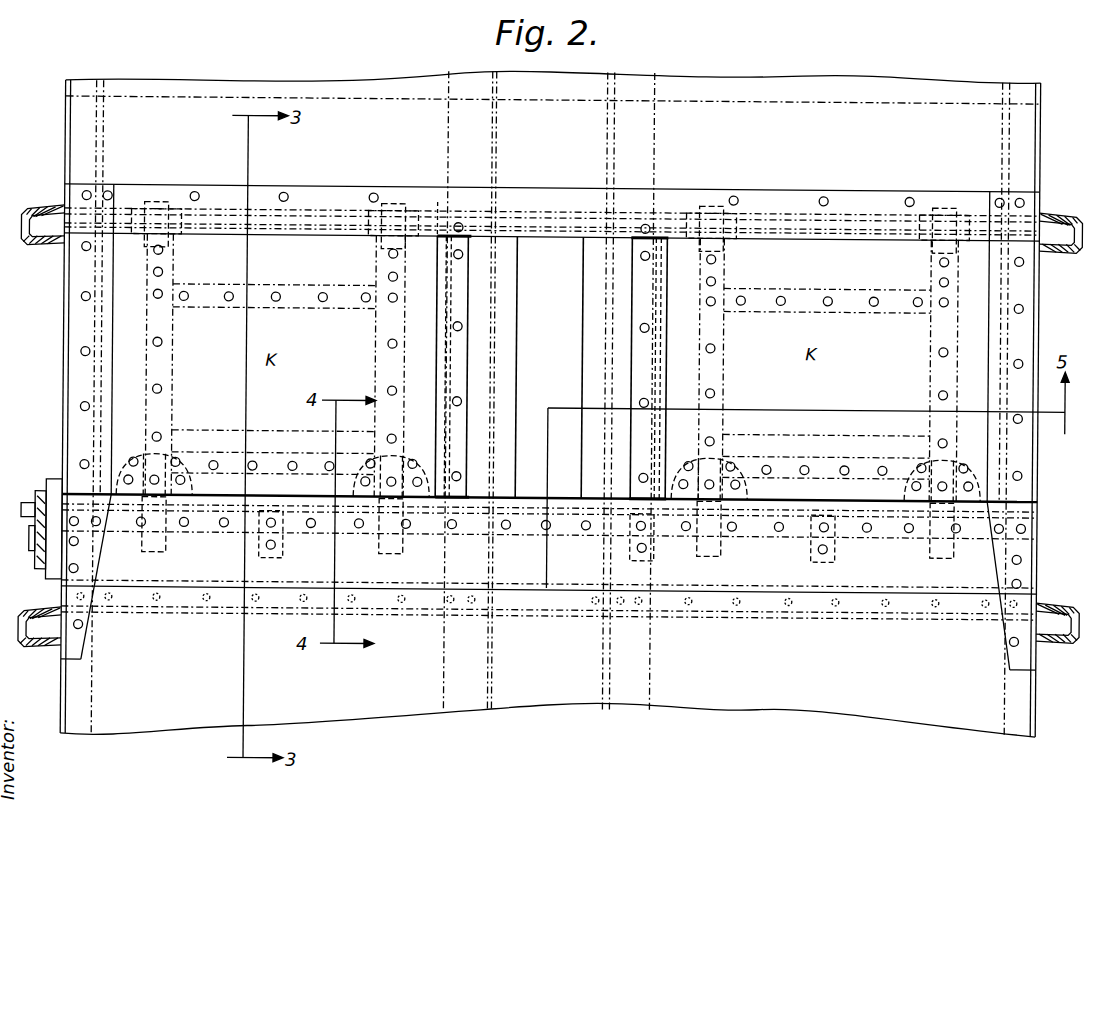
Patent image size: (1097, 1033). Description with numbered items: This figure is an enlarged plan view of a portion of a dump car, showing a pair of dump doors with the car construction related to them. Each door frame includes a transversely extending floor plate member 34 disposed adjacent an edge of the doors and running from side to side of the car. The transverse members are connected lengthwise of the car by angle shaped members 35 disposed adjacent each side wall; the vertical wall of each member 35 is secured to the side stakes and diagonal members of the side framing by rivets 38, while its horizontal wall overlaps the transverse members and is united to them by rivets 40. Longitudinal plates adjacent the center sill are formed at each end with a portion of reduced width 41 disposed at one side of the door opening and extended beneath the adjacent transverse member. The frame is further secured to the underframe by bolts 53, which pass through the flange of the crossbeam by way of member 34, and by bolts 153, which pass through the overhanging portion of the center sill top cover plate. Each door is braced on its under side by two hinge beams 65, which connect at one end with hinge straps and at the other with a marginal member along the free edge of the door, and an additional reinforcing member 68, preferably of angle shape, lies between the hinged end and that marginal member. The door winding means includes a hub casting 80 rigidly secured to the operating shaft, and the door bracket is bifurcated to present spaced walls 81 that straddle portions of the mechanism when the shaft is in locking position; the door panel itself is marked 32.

The door 32 is at (551, 361).
The floor plate member 34 is at (168, 192).
The angle shaped member 35 is at (110, 400).
The rivets 38 is at (72, 600).
The rivets 40 is at (88, 196).
The portion of reduced width 41 is at (445, 206).
The bolts 53 is at (283, 195).
The hinge beams 65 is at (176, 352).
The reinforcing member 68 is at (272, 310).
The hub casting 80 is at (236, 565).
The spaced walls 81 is at (145, 458).
The bolts 153 is at (454, 330).